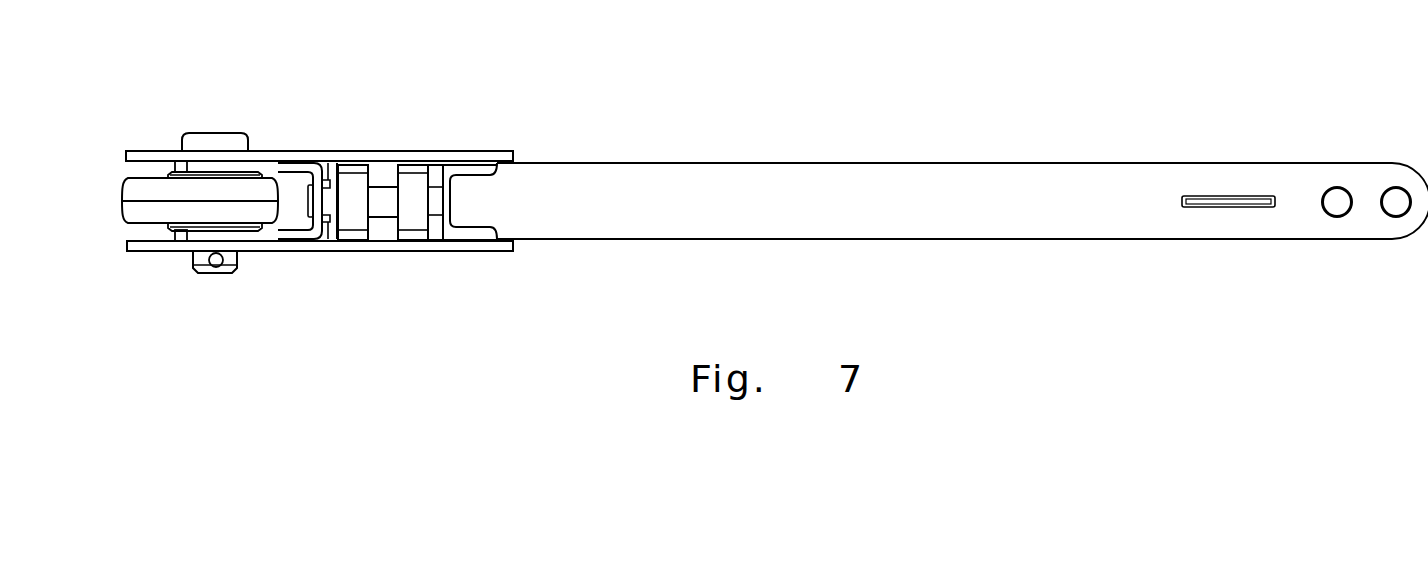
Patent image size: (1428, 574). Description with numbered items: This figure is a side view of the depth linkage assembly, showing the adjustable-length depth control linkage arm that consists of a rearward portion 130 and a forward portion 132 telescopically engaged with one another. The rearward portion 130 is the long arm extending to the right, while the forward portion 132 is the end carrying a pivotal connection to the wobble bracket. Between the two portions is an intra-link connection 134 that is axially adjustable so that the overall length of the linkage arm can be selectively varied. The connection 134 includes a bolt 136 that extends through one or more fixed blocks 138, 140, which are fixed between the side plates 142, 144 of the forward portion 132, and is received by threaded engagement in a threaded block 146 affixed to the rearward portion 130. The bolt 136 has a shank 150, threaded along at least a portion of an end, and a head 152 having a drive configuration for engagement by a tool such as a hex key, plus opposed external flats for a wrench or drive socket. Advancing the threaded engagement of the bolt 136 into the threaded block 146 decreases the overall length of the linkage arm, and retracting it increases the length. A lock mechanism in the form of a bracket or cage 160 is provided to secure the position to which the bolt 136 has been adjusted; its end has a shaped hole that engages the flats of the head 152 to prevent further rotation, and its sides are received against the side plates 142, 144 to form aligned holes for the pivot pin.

The rearward portion 130 is at (1072, 182).
The forward portion 132 is at (266, 260).
The intra-link connection 134 is at (490, 200).
The bolt 136 is at (326, 150).
The fixed block 138 is at (355, 168).
The fixed block 140 is at (413, 172).
The side plate 142 is at (472, 150).
The side plate 144 is at (480, 253).
The threaded block 146 is at (482, 170).
The shank 150 is at (383, 207).
The head 152 is at (306, 196).
The cage 160 is at (304, 247).